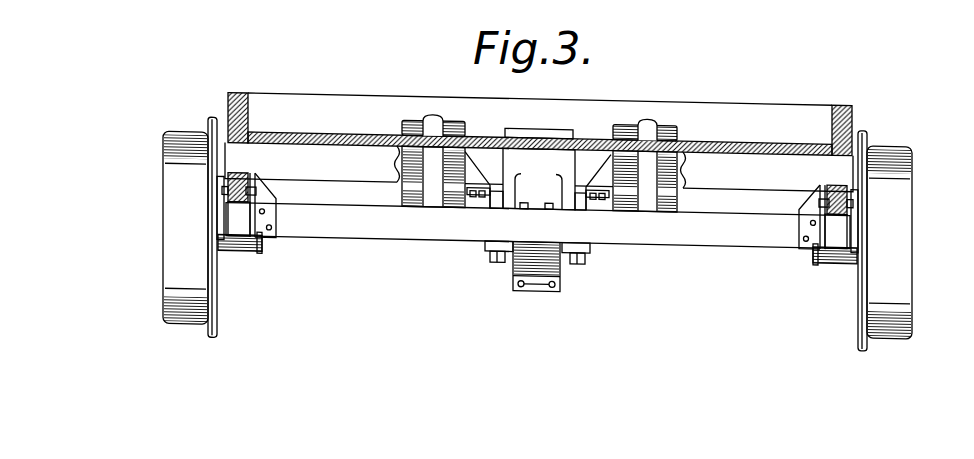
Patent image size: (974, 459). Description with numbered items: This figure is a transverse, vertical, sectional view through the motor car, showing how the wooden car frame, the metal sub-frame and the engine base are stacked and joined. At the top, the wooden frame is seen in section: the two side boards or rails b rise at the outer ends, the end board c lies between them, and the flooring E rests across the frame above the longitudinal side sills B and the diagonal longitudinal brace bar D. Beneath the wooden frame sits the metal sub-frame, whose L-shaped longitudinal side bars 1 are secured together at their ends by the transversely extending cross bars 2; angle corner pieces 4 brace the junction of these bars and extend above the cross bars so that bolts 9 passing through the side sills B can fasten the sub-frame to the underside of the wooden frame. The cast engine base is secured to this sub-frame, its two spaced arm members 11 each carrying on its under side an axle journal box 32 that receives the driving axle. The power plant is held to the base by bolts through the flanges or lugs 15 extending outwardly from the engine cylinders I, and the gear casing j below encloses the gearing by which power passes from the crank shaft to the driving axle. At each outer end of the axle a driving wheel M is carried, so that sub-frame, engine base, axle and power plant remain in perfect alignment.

The longitudinal side bar 1 is at (538, 226).
The transversely extending cross bar 2 is at (253, 227).
The angle corner piece 4 is at (277, 218).
The bolt 9 is at (257, 190).
The arm member 11 is at (490, 193).
The flange or lug 15 is at (480, 165).
The axle journal box 32 is at (487, 240).
The side board or rail b is at (228, 101).
The end board c is at (540, 114).
The longitudinal side sill B is at (233, 185).
The diagonal longitudinal brace bar D is at (539, 167).
The flooring E is at (762, 131).
The engine cylinder I is at (425, 114).
The gear casing j is at (542, 274).
The driving wheel M is at (172, 195).